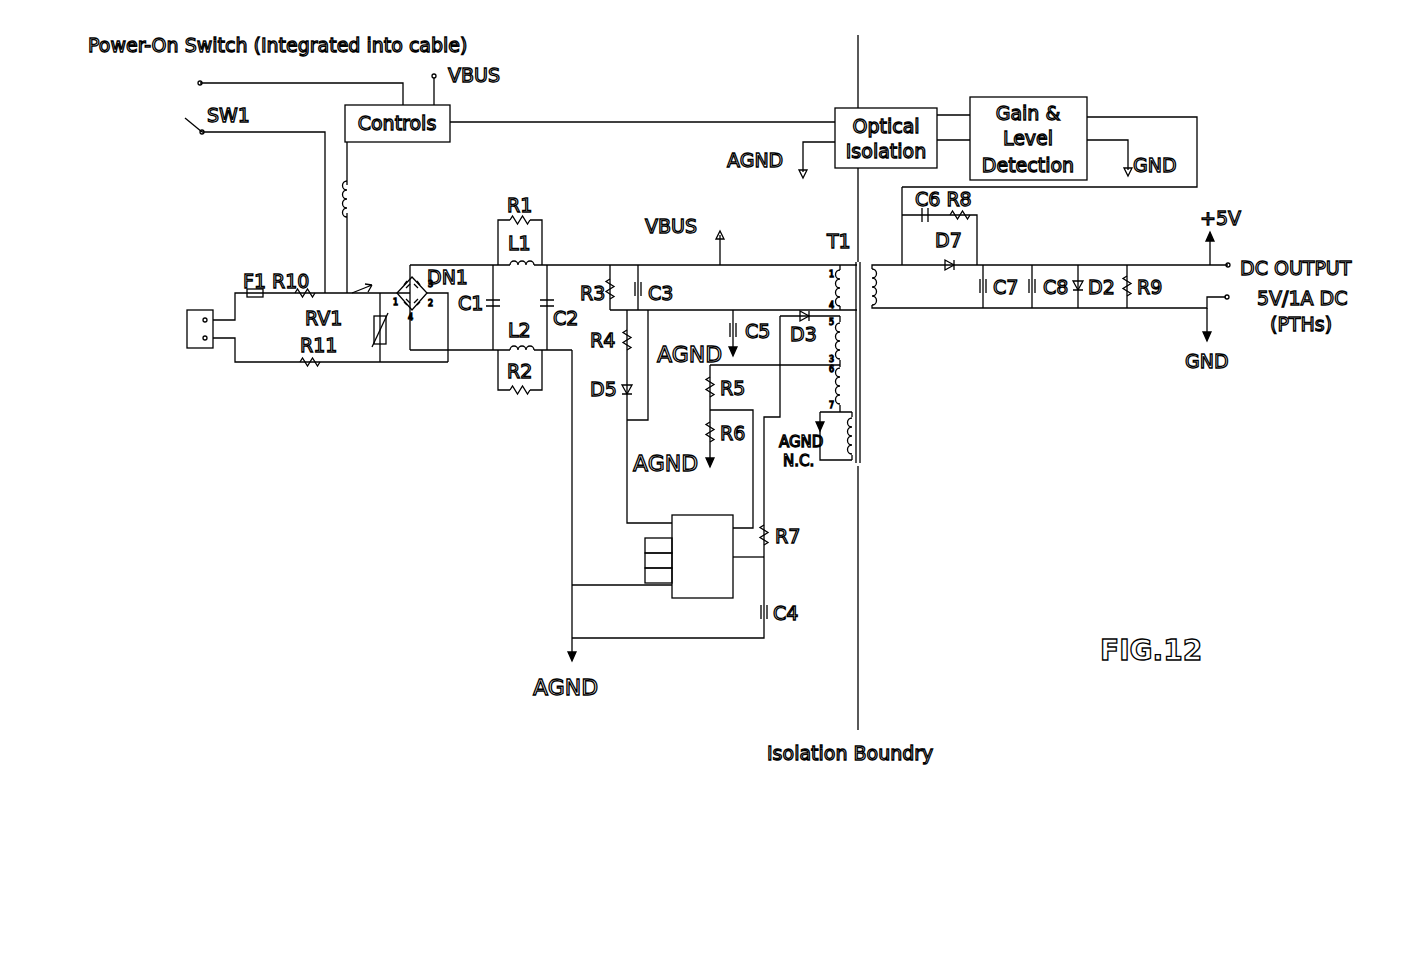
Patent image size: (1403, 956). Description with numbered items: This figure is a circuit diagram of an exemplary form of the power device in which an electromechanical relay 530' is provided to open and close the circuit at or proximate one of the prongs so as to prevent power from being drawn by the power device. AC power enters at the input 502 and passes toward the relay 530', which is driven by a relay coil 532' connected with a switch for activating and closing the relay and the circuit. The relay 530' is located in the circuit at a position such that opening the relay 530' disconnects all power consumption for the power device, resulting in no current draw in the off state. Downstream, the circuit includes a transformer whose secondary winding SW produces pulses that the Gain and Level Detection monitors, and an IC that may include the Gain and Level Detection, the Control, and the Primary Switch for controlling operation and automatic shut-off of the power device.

The input 502 is at (237, 330).
The relay 530' is at (403, 261).
The relay coil 532' is at (410, 217).
The element IC is at (700, 600).
The transformer secondary winding SW is at (900, 297).